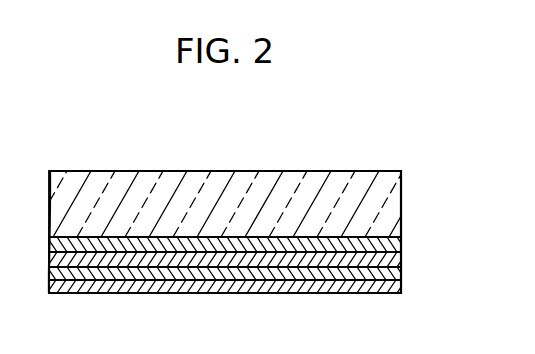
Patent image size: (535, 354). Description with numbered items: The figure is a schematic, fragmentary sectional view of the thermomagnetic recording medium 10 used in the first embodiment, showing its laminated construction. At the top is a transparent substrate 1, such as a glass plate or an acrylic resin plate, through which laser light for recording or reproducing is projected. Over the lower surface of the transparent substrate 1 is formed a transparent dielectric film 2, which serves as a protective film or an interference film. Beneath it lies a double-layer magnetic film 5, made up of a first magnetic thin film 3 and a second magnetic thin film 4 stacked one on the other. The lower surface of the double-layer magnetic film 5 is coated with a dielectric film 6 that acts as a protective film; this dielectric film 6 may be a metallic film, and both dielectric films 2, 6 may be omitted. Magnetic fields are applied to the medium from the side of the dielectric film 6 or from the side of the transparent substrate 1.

The thermomagnetic recording medium 10 is at (81, 166).
The transparent substrate 1 is at (401, 187).
The transparent dielectric film 2 is at (401, 243).
The first magnetic thin film 3 is at (401, 255).
The second magnetic thin film 4 is at (401, 269).
The double-layer magnetic film 5 is at (445, 222).
The dielectric film 6 is at (401, 288).